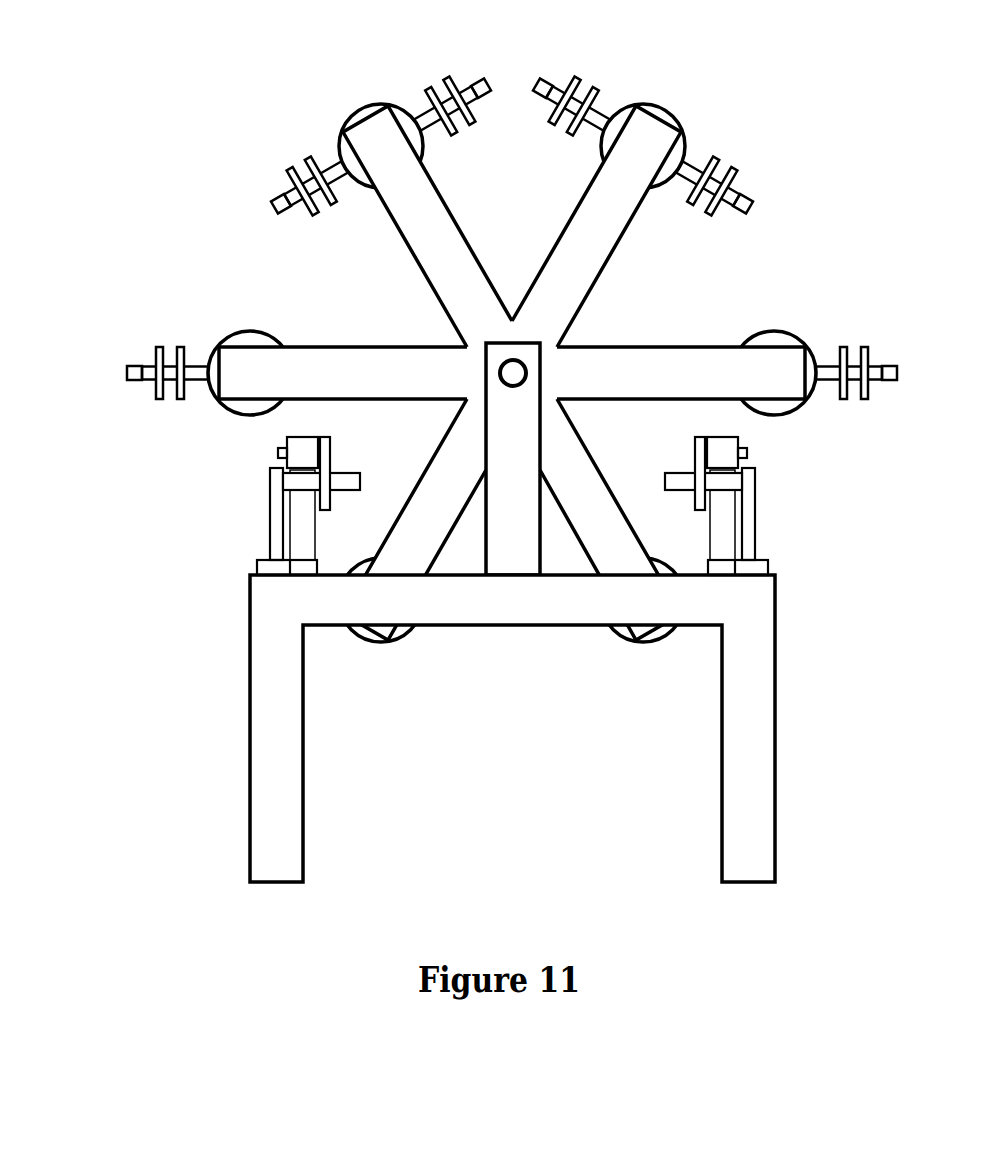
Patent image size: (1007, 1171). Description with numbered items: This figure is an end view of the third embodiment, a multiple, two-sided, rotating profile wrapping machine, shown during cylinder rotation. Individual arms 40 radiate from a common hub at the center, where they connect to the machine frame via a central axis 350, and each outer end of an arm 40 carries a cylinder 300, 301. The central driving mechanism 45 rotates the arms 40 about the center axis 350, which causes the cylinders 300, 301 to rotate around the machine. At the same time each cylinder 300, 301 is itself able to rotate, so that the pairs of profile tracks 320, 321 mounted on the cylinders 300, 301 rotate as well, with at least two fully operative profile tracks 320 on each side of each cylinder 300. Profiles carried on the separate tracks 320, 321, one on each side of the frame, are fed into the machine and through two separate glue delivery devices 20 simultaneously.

The glue delivery device 20 is at (268, 478).
The arm 40 is at (426, 260).
The central driving mechanism 45 is at (170, 390).
The cylinder 300 is at (329, 96).
The cylinder 301 is at (686, 102).
The profile track 320 is at (424, 134).
The profile track 321 is at (613, 134).
The central axis 350 is at (508, 419).